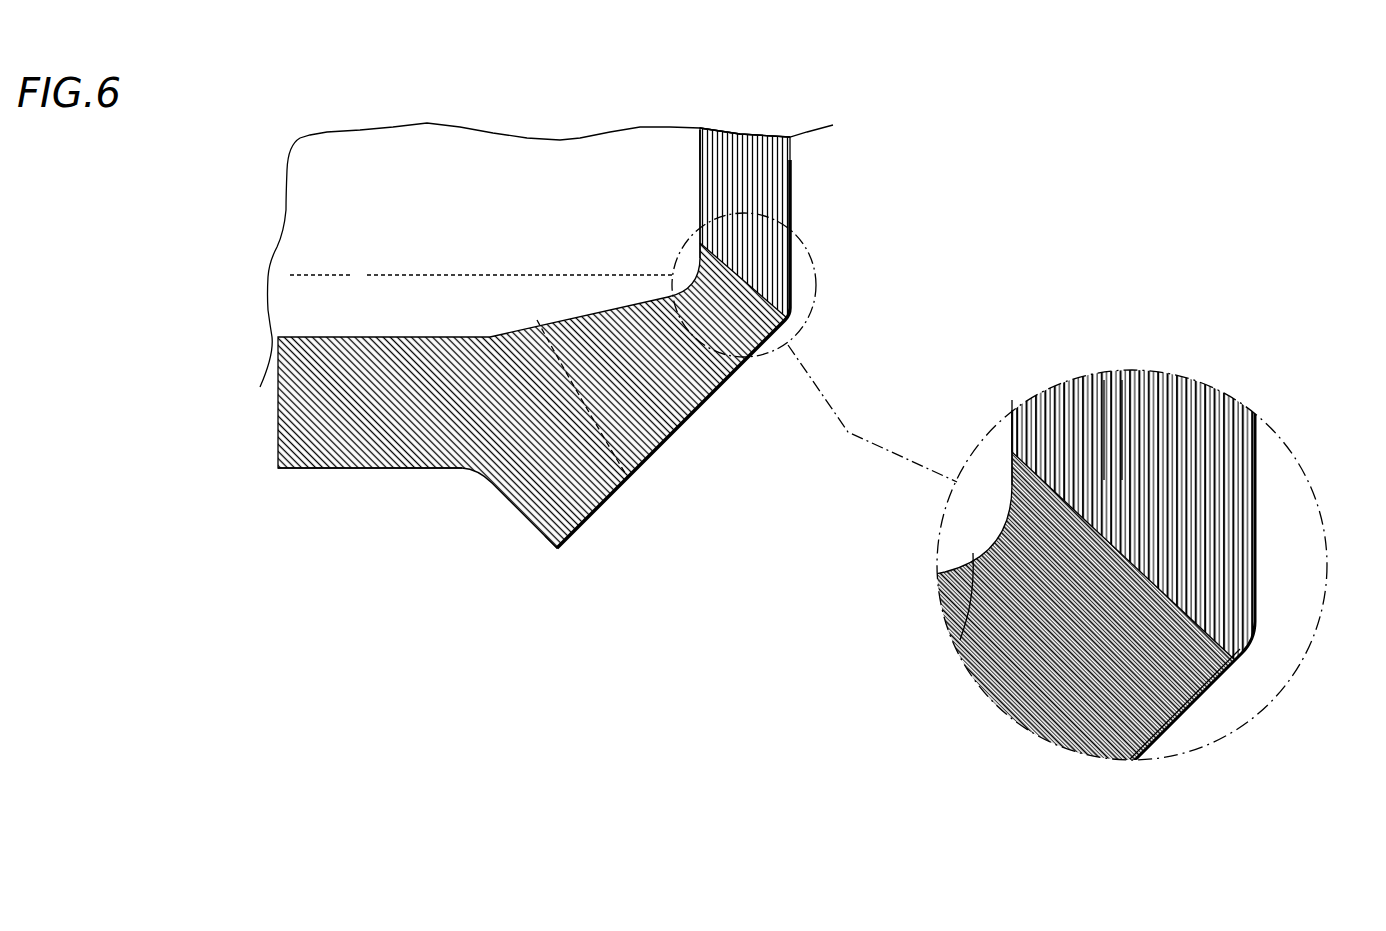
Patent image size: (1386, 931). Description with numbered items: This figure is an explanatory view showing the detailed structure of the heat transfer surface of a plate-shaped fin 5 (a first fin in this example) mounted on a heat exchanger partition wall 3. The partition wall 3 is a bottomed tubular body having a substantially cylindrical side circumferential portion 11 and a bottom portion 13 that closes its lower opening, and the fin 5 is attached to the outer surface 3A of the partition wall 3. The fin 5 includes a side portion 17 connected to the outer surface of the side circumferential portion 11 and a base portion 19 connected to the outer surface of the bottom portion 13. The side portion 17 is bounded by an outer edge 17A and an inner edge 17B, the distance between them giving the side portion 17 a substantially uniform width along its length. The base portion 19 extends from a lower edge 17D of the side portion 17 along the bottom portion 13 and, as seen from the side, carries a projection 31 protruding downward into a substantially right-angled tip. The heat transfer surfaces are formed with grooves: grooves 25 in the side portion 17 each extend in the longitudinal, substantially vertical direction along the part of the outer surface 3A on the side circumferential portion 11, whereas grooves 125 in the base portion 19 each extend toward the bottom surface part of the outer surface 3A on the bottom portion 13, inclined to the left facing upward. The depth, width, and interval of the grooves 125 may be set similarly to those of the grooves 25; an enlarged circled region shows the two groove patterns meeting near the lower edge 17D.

The partition wall 3 is at (347, 222).
The outer surface 3A is at (703, 177).
The plate-shaped fin 5 is at (700, 428).
The side circumferential portion 11 is at (720, 130).
The bottom portion 13 is at (630, 480).
The side portion 17 is at (797, 178).
The outer edge 17A is at (793, 203).
The inner edge 17B is at (699, 157).
The lower edge 17D is at (785, 333).
The base portion 19 is at (403, 472).
The grooves 25 is at (1104, 380).
The projection 31 is at (557, 551).
The grooves 125 is at (1197, 704).